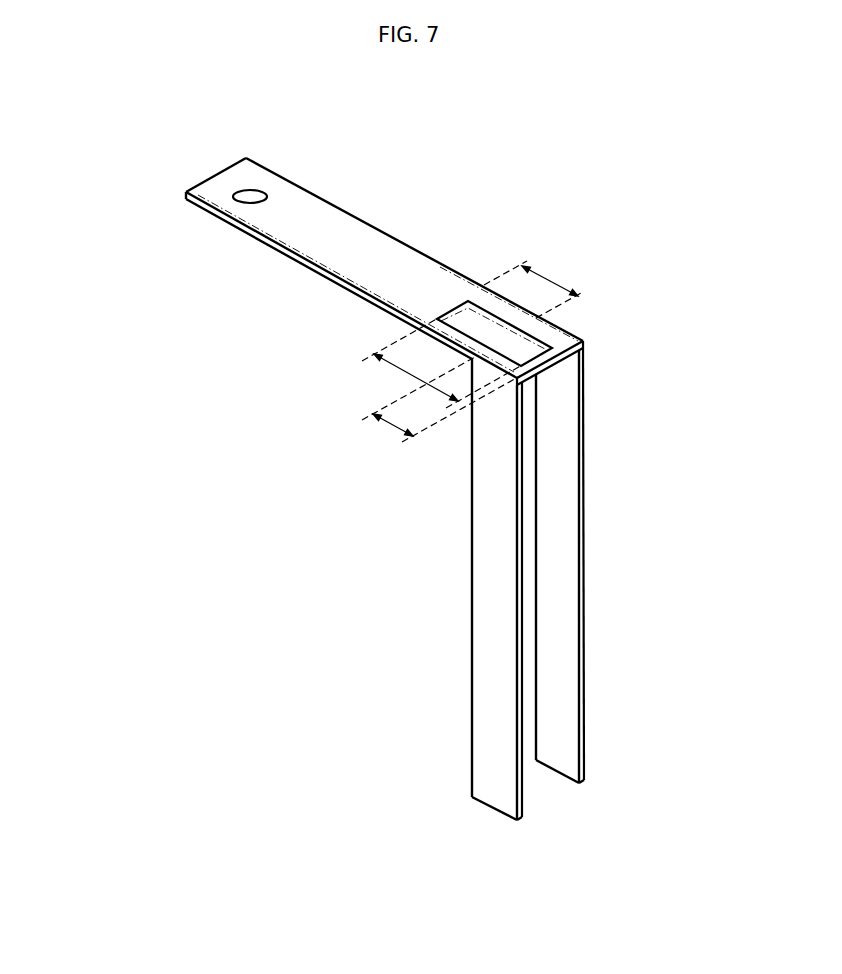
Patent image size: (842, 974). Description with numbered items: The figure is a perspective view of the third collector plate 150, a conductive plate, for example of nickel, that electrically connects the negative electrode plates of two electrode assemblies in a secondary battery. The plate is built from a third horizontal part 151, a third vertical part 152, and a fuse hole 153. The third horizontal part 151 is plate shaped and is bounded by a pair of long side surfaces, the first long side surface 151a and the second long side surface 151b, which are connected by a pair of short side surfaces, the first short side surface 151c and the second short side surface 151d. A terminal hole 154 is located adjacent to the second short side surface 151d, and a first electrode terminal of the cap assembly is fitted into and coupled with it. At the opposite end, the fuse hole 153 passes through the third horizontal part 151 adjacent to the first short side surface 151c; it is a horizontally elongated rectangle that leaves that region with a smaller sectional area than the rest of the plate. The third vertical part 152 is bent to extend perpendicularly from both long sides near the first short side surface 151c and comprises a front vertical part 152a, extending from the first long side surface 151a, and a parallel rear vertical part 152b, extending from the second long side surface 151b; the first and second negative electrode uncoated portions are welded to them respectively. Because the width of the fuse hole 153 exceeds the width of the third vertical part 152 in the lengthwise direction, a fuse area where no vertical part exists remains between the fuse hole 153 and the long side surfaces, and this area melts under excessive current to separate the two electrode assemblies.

The third collector plate 150 is at (109, 122).
The third horizontal part 151 is at (337, 261).
The first long side surface 151a is at (256, 232).
The second long side surface 151b is at (345, 211).
The first short side surface 151c is at (552, 377).
The second short side surface 151d is at (214, 174).
The third vertical part 152 is at (683, 513).
The front vertical part 152a is at (495, 621).
The rear vertical part 152b is at (568, 514).
The fuse hole 153 is at (447, 305).
The terminal hole 154 is at (230, 193).